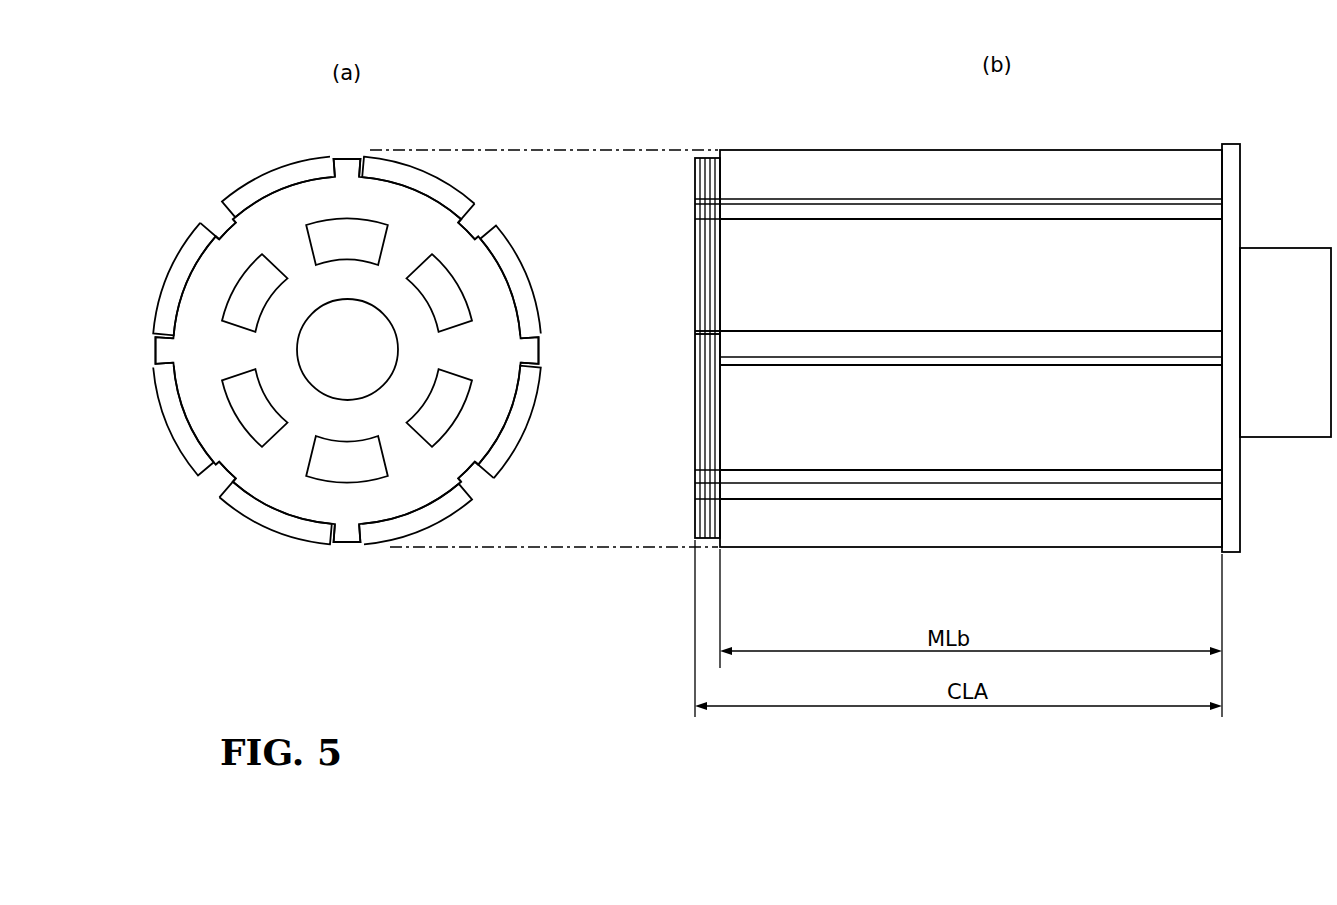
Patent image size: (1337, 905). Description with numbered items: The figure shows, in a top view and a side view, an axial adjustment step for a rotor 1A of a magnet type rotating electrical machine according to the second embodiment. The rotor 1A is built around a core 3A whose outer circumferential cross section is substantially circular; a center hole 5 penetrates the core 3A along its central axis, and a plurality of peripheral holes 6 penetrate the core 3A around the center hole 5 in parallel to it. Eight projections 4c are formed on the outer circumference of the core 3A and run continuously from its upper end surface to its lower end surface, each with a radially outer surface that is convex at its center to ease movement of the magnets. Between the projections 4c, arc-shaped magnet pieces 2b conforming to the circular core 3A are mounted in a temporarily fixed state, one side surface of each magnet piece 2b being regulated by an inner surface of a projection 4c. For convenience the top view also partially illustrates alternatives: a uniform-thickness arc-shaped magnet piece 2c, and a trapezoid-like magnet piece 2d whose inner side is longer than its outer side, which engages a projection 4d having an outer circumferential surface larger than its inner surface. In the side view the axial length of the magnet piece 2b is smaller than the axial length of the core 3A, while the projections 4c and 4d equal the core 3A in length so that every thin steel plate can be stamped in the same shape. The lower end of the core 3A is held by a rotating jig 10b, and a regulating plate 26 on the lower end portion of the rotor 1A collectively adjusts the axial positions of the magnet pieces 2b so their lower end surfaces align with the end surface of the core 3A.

The rotor 1A is at (203, 182).
The magnet piece 2b is at (162, 378).
The arc-shaped magnet piece 2c is at (433, 525).
The arc-shaped magnet piece 2d is at (263, 530).
The core 3A is at (480, 282).
The projection 4c is at (158, 338).
The projection 4d is at (210, 484).
The center hole 5 is at (297, 336).
The peripheral hole 6 is at (227, 287).
The rotating jig 10b is at (1295, 440).
The regulating plate 26 is at (1236, 146).